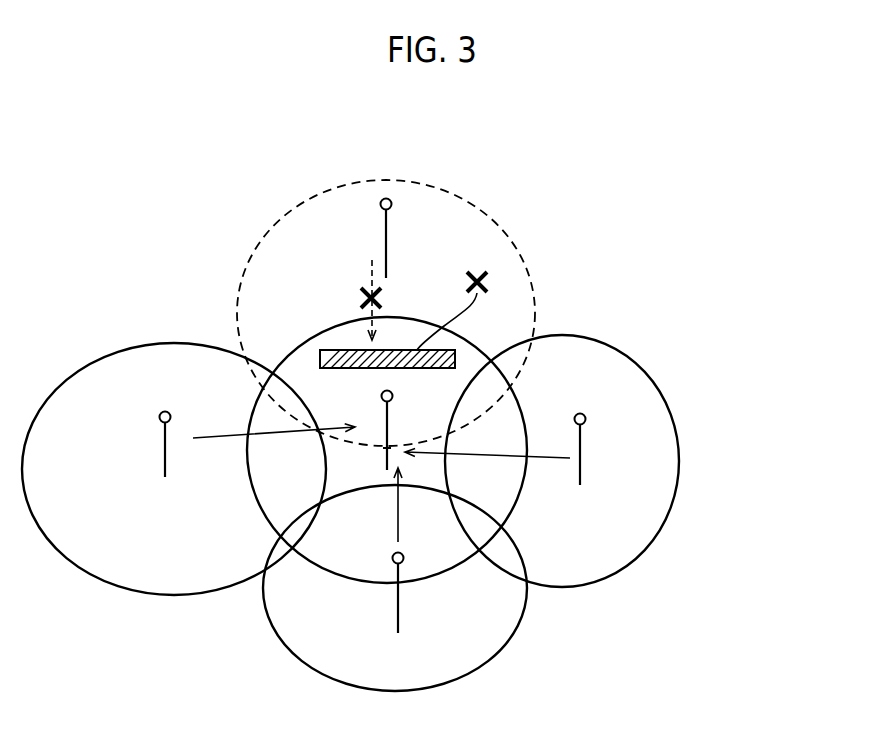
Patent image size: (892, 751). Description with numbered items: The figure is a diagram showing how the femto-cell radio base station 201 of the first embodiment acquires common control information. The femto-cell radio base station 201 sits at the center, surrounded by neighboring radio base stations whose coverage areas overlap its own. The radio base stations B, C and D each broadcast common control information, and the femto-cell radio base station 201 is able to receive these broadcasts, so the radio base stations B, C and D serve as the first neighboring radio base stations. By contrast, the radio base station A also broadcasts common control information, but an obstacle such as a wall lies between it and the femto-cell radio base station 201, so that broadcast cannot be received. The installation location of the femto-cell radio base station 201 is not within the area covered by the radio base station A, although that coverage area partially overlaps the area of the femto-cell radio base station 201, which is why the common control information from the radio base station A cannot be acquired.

The femto-cell radio base station 201 is at (392, 413).
The radio base station A is at (388, 240).
The radio base station B is at (163, 447).
The radio base station C is at (400, 608).
The radio base station D is at (582, 456).